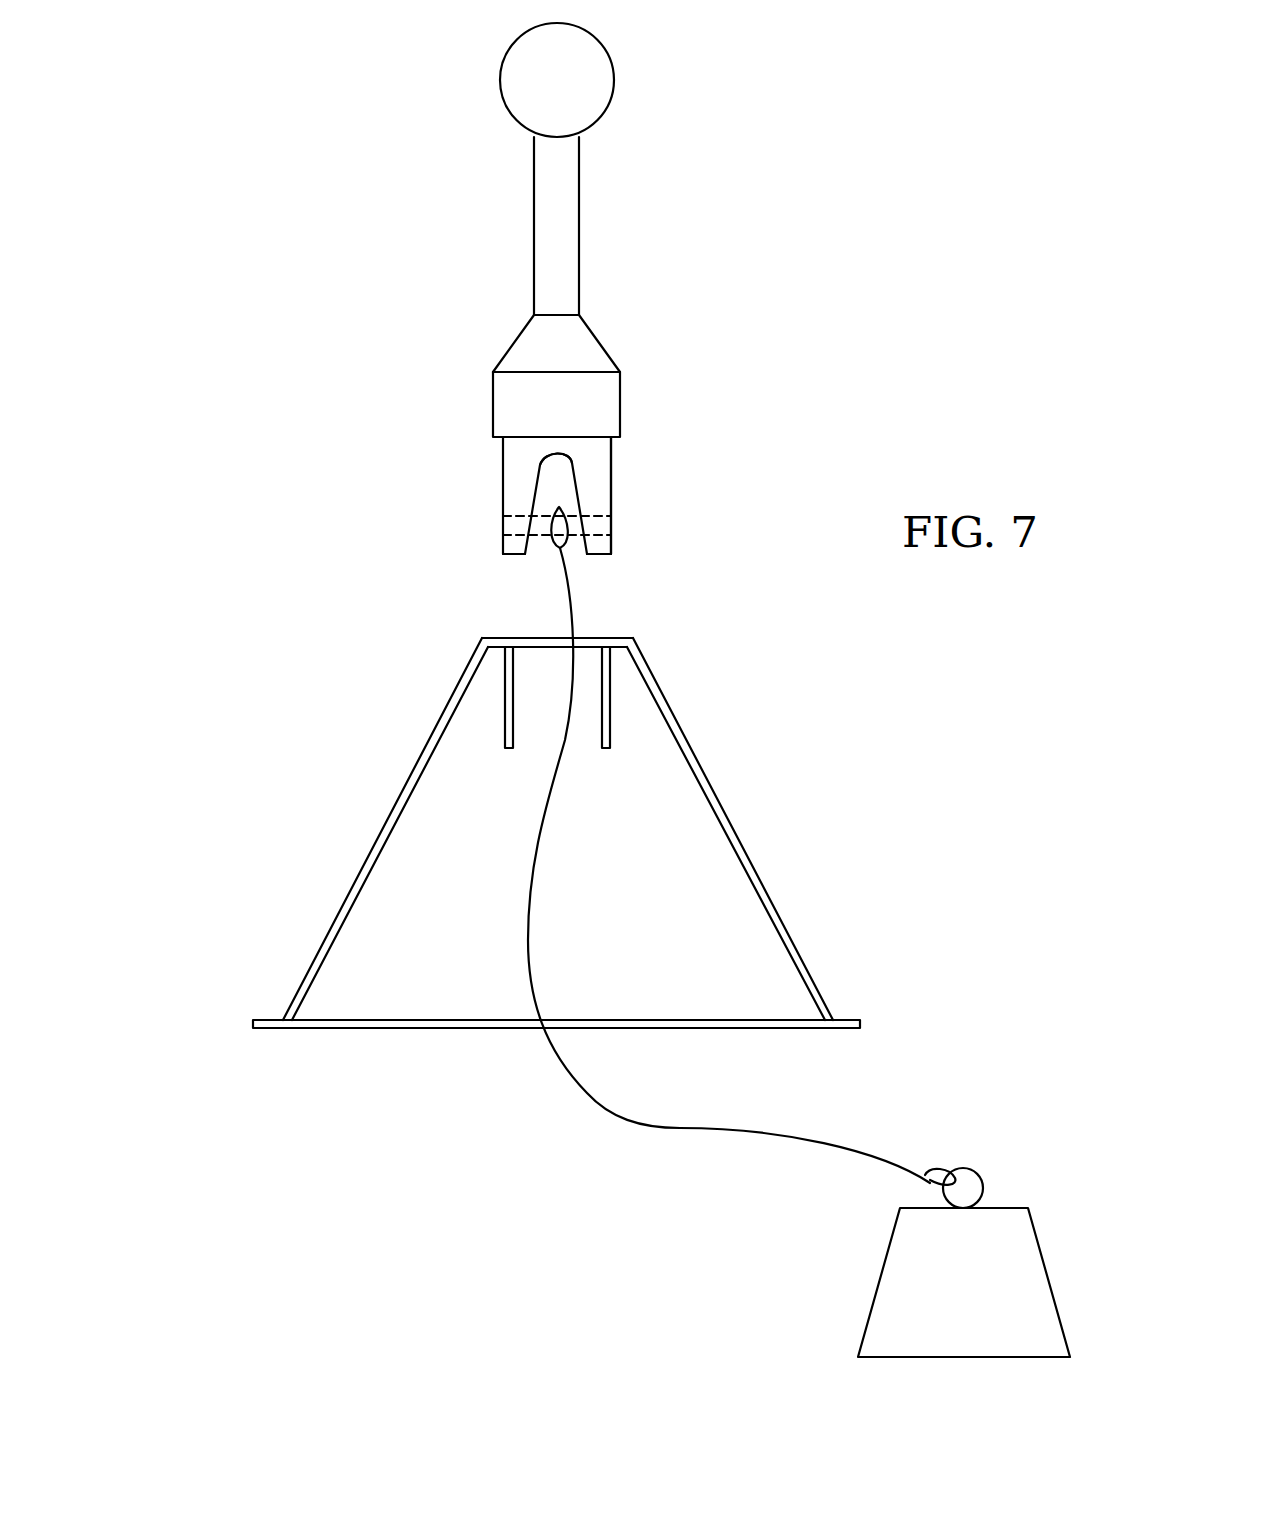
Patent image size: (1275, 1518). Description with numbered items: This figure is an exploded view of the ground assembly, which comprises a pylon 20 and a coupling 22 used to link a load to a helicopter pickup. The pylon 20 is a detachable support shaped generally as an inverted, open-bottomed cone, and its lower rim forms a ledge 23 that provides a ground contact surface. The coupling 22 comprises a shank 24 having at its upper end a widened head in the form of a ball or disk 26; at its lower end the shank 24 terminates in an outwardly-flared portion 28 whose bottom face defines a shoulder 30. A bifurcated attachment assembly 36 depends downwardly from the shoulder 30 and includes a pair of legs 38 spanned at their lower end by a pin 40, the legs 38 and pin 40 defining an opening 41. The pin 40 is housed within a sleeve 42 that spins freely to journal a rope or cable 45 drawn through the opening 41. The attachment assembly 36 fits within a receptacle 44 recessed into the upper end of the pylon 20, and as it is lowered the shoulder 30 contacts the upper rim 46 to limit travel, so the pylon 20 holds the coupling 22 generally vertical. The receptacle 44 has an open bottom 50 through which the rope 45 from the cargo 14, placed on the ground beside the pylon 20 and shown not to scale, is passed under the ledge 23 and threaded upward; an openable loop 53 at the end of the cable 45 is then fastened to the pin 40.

The cargo 14 is at (885, 1300).
The pylon 20 is at (790, 933).
The coupling 22 is at (603, 243).
The ledge 23 is at (845, 1020).
The shank 24 is at (547, 190).
The ball or disk 26 is at (598, 80).
The outwardly-flared portion 28 is at (520, 352).
The shoulder 30 is at (493, 410).
The bifurcated attachment assembly 36 is at (645, 457).
The legs 38 is at (603, 485).
The pin 40 is at (503, 520).
The opening 41 is at (558, 480).
The sleeve 42 is at (587, 522).
The receptacle 44 is at (503, 708).
The rope or cable 45 is at (937, 1172).
The upper rim 46 is at (530, 636).
The open bottom 50 is at (533, 733).
The openable loop 53 is at (567, 543).